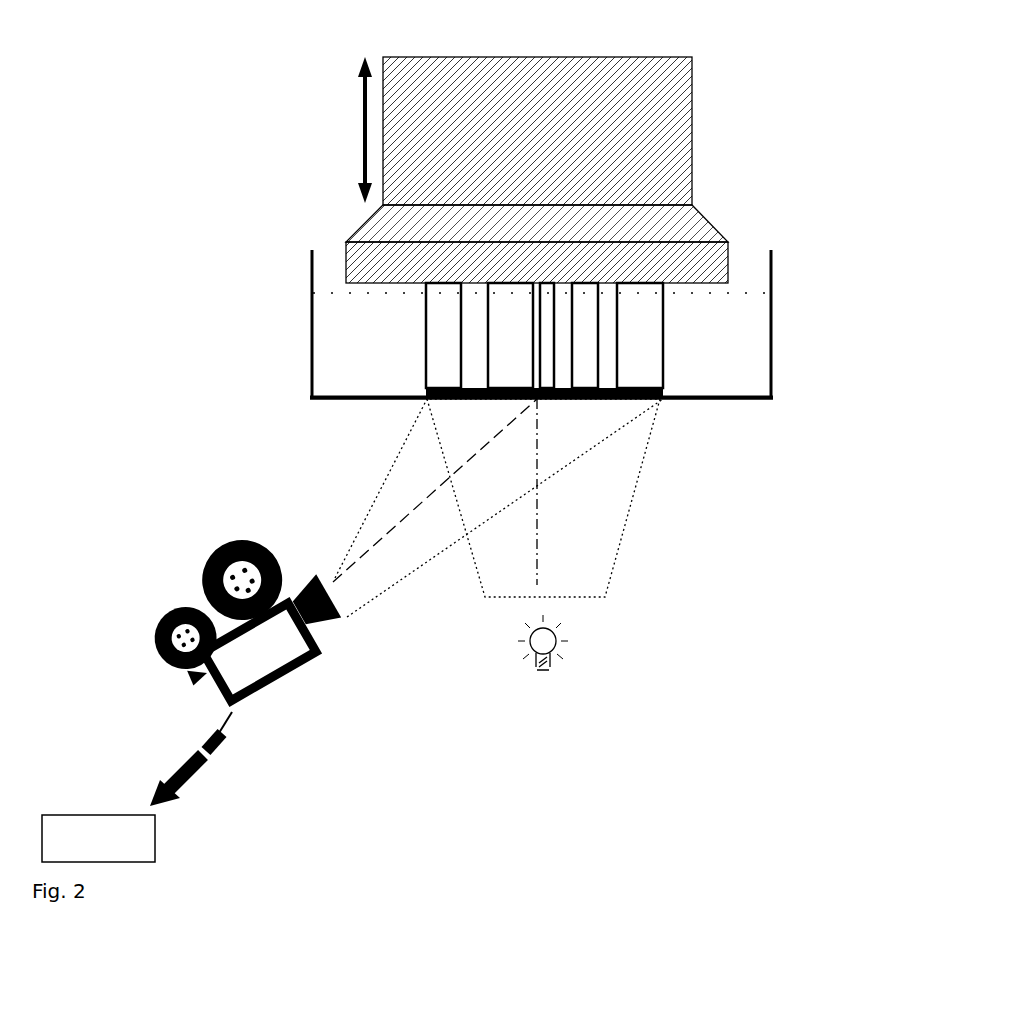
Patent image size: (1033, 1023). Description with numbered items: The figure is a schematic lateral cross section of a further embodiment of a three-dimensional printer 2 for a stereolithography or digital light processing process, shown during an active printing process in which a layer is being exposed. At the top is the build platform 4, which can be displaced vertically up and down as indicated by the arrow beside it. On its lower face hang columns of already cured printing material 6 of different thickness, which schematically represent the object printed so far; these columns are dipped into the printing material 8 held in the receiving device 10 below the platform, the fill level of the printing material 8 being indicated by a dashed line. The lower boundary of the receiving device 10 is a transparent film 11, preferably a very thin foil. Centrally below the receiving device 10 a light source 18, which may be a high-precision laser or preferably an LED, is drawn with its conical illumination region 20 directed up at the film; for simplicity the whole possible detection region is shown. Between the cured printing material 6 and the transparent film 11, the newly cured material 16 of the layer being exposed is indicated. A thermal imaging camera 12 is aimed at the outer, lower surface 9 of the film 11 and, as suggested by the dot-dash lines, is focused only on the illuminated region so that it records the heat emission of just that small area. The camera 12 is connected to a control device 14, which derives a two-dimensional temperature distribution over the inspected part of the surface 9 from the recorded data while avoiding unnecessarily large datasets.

The 3D printer 2 is at (752, 66).
The build platform 4 is at (673, 160).
The cured printing material 6 is at (647, 348).
The printing material 8 is at (333, 349).
The lower surface of the film 9 is at (738, 410).
The receiving device 10 is at (775, 357).
The transparent film 11 is at (775, 397).
The thermal imaging camera 12 is at (285, 680).
The control device 14 is at (103, 833).
The newly cured material 16 is at (647, 400).
The light source 18 is at (583, 648).
The conical illumination region 20 is at (597, 545).